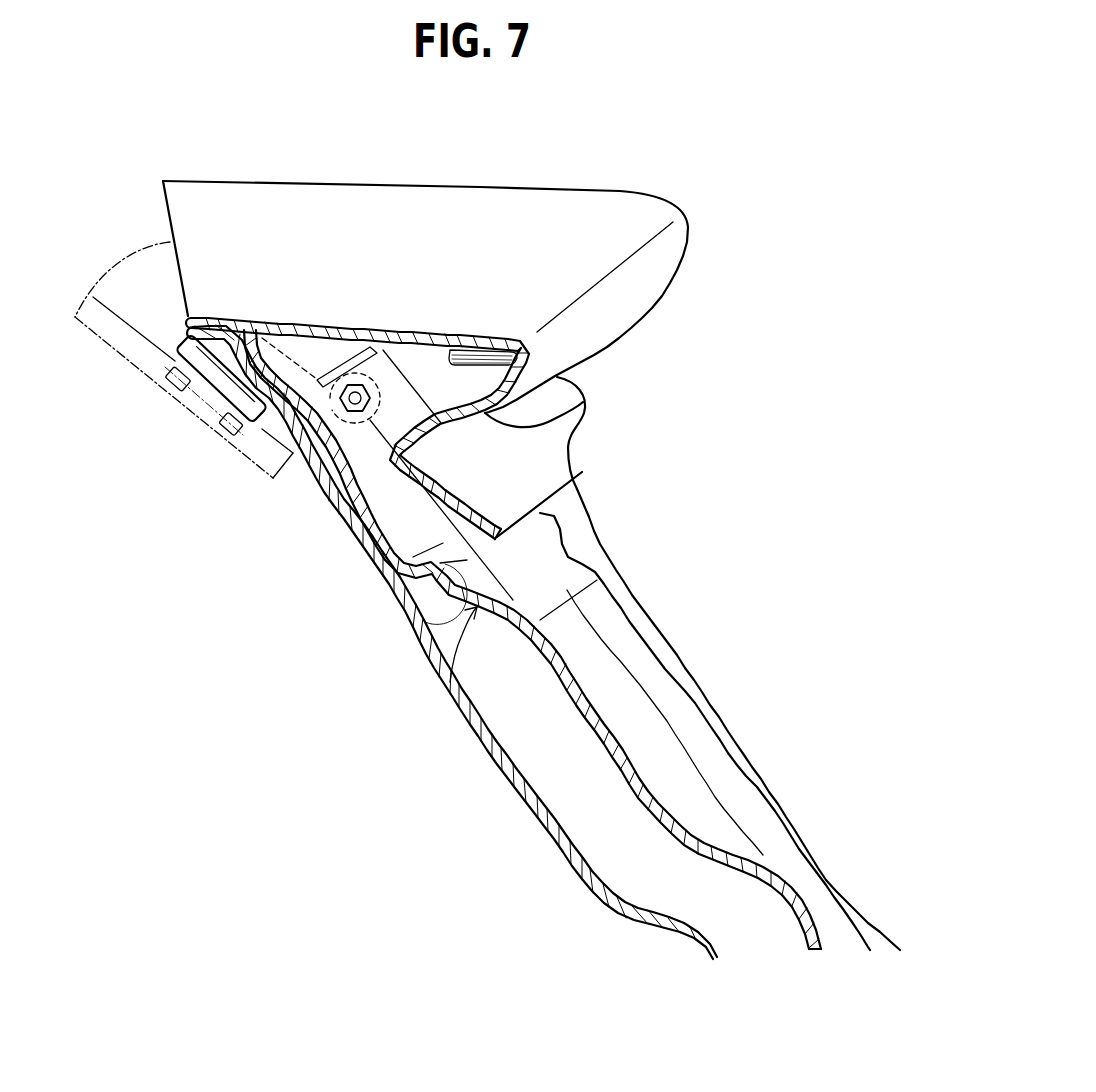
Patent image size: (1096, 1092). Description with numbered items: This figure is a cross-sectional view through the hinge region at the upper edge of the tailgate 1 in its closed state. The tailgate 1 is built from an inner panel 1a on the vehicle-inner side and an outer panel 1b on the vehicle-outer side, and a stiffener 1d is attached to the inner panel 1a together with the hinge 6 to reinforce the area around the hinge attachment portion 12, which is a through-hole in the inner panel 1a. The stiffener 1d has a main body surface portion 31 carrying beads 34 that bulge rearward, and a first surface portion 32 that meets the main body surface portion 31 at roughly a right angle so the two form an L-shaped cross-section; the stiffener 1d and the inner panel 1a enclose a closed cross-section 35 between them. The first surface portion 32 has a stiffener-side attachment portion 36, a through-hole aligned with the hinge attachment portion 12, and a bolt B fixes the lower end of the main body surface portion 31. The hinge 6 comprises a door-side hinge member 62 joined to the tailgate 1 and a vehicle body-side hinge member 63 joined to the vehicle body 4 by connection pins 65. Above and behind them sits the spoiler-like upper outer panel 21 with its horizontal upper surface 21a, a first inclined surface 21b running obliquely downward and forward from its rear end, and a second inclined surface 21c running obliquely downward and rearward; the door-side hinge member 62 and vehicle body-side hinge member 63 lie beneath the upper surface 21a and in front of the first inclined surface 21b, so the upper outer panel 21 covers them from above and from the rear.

The tailgate 1 is at (737, 593).
The inner panel 1a is at (452, 642).
The outer panel 1b is at (586, 317).
The stiffener 1d is at (452, 687).
The vehicle body 4 is at (73, 313).
The hinge 6 is at (322, 330).
The hinge attachment portion 12 is at (324, 469).
The upper outer panel 21 is at (511, 265).
The upper surface 21a is at (483, 200).
The first inclined surface 21b is at (585, 398).
The second inclined surface 21c is at (500, 484).
The main body surface portion 31 is at (528, 639).
The first surface portion 32 is at (351, 503).
The bead 34 is at (413, 620).
The closed cross-section 35 is at (560, 777).
The stiffener-side attachment portion 36 is at (355, 398).
The door-side hinge member 62 is at (309, 375).
The vehicle body-side hinge member 63 is at (217, 383).
The connection pin 65 is at (163, 383).
The bolt B is at (352, 404).